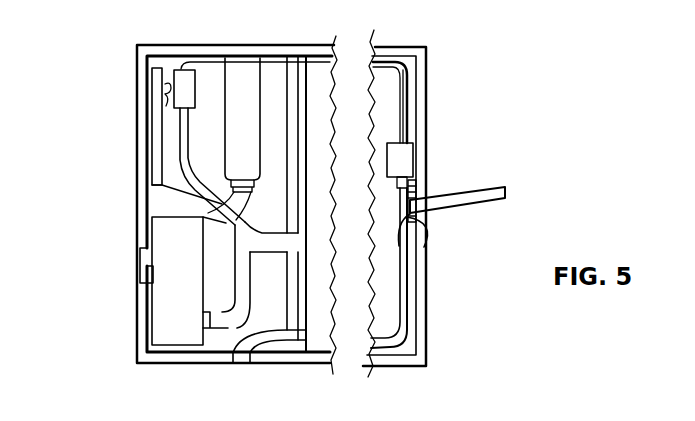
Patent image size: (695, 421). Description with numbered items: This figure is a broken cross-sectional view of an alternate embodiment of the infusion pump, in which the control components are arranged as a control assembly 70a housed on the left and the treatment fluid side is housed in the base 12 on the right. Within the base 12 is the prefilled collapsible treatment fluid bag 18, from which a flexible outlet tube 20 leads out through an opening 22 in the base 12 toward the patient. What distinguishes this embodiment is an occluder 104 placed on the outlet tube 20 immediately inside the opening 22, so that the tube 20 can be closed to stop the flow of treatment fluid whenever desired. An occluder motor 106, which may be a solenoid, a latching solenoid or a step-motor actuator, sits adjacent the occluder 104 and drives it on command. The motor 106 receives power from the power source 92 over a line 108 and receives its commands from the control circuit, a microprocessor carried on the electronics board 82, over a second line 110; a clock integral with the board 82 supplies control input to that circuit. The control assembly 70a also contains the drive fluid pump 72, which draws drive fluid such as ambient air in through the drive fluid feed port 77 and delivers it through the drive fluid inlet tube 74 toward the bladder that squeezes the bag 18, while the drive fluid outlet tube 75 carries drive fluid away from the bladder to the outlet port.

The control assembly 70a is at (82, 128).
The electronics board 82 is at (148, 79).
The line 110 is at (184, 70).
The line 108 is at (190, 163).
The power source 92 is at (245, 87).
The drive fluid feed port 77 is at (137, 256).
The drive fluid pump 72 is at (177, 302).
The drive fluid inlet tube 74 is at (227, 324).
The drive fluid outlet tube 75 is at (231, 324).
The base 12 is at (375, 367).
The treatment fluid bag 18 is at (387, 314).
The occluder motor 106 is at (400, 158).
The opening 22 is at (427, 206).
The outlet tube 20 is at (477, 197).
The occluder 104 is at (415, 233).